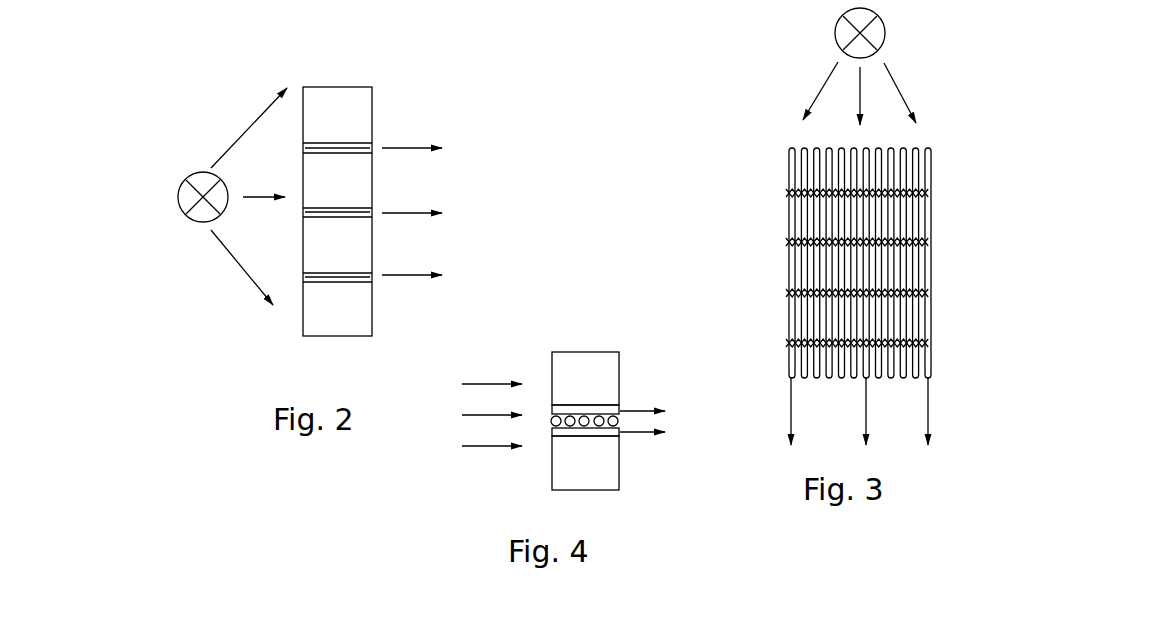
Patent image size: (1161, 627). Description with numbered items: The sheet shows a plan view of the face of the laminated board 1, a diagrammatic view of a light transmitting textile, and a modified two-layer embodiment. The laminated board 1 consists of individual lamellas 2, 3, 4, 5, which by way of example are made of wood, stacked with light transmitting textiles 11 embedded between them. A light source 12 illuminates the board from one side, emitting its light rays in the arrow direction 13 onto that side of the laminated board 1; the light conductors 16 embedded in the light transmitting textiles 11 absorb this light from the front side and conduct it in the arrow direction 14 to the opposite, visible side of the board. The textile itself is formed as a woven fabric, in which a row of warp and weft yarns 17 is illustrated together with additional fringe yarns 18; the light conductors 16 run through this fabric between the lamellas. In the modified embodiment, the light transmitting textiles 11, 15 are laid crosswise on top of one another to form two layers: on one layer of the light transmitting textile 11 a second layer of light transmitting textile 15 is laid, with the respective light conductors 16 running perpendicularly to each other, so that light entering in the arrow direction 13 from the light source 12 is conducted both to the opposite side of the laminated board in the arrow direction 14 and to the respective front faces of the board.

In FIG. 2, the laminated board 1 is at (285, 62).
In FIG. 2, the lamella 2 is at (336, 118).
In FIG. 4, the lamella 2 is at (580, 380).
In FIG. 2, the lamella 3 is at (337, 172).
In FIG. 4, the lamella 3 is at (585, 465).
In FIG. 2, the lamella 4 is at (337, 250).
In FIG. 2, the lamella 5 is at (337, 313).
In FIG. 2, the light transmitting textile 11 is at (330, 213).
In FIG. 4, the light transmitting textile 11 is at (597, 410).
In FIG. 3, the light transmitting textile 11 is at (760, 221).
In FIG. 2, the light source 12 is at (190, 196).
In FIG. 3, the light source 12 is at (845, 33).
In FIG. 2, the arrow direction 13 is at (232, 258).
In FIG. 4, the arrow direction 13 is at (478, 381).
In FIG. 3, the arrow direction 13 is at (820, 88).
In FIG. 2, the arrow direction 14 is at (412, 150).
In FIG. 4, the arrow direction 14 is at (630, 432).
In FIG. 3, the arrow direction 14 is at (790, 400).
In FIG. 4, the light transmitting textile 15 is at (555, 423).
In FIG. 3, the light transmitting textile 15 is at (795, 254).
In FIG. 4, the light conductor 16 is at (584, 421).
In FIG. 3, the light conductor 16 is at (790, 160).
In FIG. 3, the warp and weft yarns 17 is at (822, 293).
In FIG. 3, the fringe yarns 18 is at (790, 343).